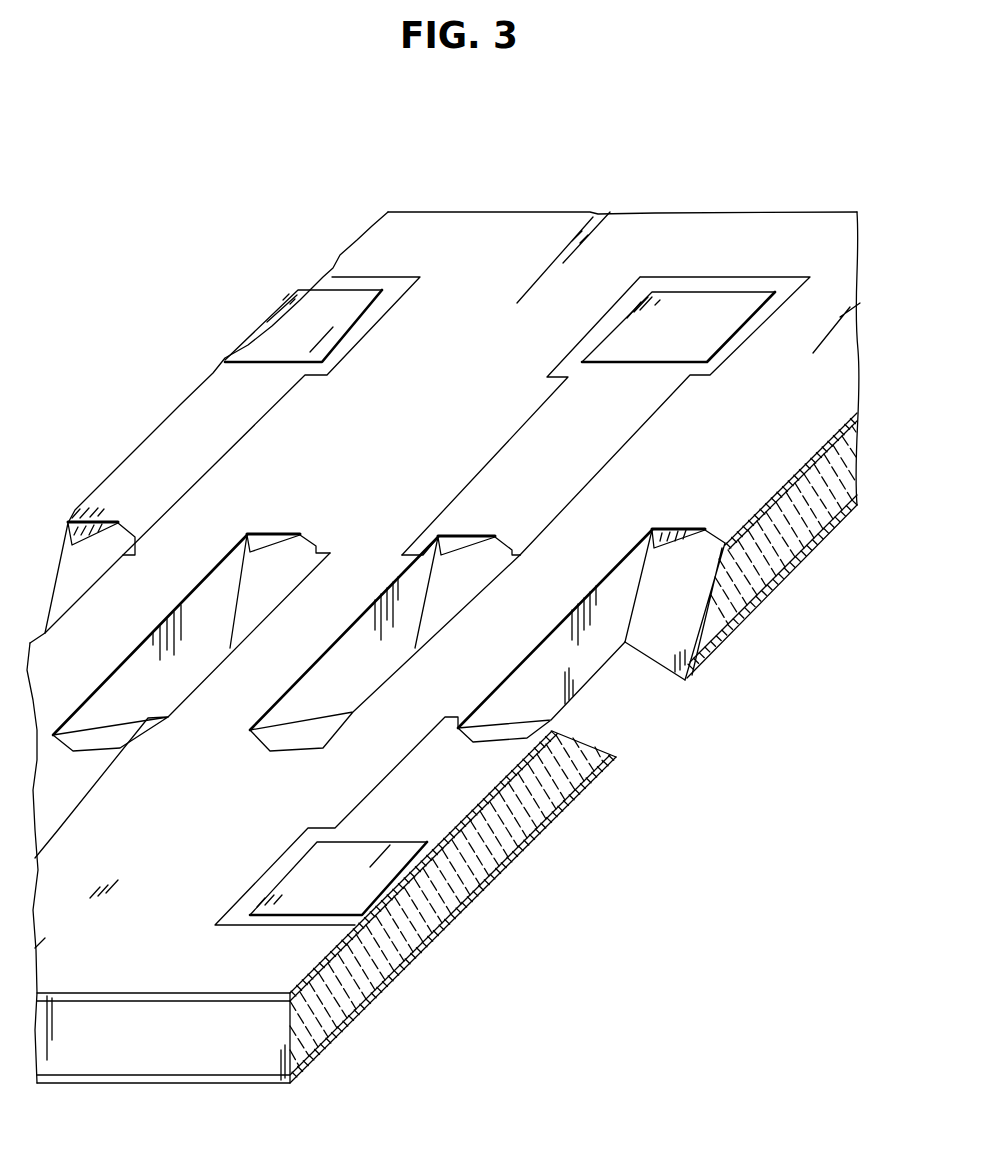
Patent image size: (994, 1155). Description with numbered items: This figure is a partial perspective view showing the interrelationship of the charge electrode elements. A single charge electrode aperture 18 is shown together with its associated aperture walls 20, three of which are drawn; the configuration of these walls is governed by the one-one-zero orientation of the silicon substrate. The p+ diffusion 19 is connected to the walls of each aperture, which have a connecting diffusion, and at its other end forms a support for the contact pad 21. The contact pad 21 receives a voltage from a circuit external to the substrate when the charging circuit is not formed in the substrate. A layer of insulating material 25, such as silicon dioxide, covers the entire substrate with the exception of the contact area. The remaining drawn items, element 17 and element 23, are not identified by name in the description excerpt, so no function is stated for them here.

The honeycomb panel assembly 17 is at (757, 194).
The charge electrode aperture 18 is at (335, 670).
The p+ diffusion 19 is at (215, 452).
The aperture walls 20 is at (660, 658).
The contact pad 21 is at (738, 297).
The bottom face sheet 23 is at (355, 990).
The layer of insulating material 25 is at (826, 386).